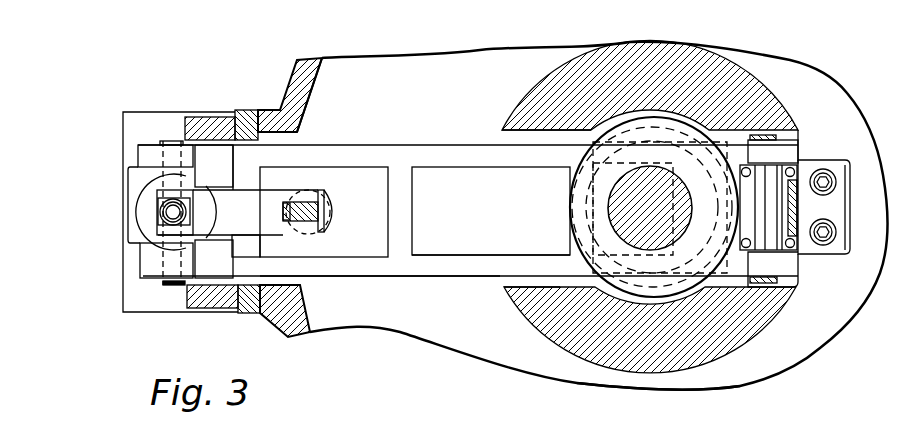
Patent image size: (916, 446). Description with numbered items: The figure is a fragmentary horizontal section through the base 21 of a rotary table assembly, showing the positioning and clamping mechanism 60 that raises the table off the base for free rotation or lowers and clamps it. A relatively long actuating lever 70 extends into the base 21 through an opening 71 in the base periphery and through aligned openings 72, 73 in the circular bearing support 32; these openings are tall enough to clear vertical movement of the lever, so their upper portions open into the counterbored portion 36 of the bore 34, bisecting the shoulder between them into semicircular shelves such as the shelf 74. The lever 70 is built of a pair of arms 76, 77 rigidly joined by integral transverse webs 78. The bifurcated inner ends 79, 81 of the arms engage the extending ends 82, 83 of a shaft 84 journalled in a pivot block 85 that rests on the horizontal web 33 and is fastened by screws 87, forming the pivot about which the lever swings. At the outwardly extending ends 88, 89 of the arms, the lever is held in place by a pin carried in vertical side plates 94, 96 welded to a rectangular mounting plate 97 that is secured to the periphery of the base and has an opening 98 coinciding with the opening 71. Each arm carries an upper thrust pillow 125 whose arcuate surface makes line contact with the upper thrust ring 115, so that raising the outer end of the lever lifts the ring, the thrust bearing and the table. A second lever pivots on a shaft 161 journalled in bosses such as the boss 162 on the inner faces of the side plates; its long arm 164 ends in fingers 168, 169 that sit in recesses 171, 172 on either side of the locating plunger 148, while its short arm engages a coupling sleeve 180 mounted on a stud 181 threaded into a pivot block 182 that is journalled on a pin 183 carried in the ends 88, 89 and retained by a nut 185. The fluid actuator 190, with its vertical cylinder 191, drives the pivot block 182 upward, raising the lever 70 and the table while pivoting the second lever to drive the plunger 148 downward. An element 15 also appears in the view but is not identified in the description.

The hub 15 is at (613, 118).
The base 21 is at (317, 75).
The circular bearing support 32 is at (727, 375).
The horizontal web 33 is at (468, 350).
The bore 34 is at (755, 331).
The enlarged or counterbored portion 36 is at (738, 97).
The positioning and clamping mechanism 60 is at (230, 327).
The actuating lever 70 is at (450, 286).
The opening 71 is at (273, 140).
The opening 72 is at (498, 137).
The opening 73 is at (792, 132).
The semicircular shelf 74 is at (560, 348).
The arm 76 is at (377, 152).
The arm 77 is at (457, 260).
The transverse webs 78 is at (250, 183).
The bifurcated inner end 79 is at (788, 148).
The bifurcated inner end 81 is at (788, 265).
The extending end of shaft 82 is at (768, 135).
The extending end of shaft 83 is at (780, 282).
The shaft 84 is at (765, 212).
The pivot block 85 is at (833, 197).
The screws 87 is at (832, 180).
The outwardly extending end 88 is at (148, 148).
The outwardly extending end 89 is at (161, 276).
The vertical side plate 94 is at (217, 122).
The vertical side plate 96 is at (225, 310).
The rectangular mounting plate 97 is at (287, 280).
The opening 98 is at (253, 132).
The upper thrust ring 115 is at (583, 153).
The upper thrust pillow 125 is at (567, 200).
The locating plunger 148 is at (323, 208).
The shaft 161 is at (232, 237).
The boss 162 is at (236, 150).
The long arm 164 is at (228, 208).
The finger 168 is at (292, 192).
The finger 169 is at (300, 237).
The recess 171 is at (325, 191).
The recess 172 is at (330, 223).
The coupling sleeve 180 is at (180, 240).
The stud 181 is at (214, 259).
The pivot block 182 is at (163, 145).
The pin 183 is at (177, 237).
The nut 185 is at (214, 166).
The fluid actuator 190 is at (138, 243).
The cylinder 191 is at (200, 223).